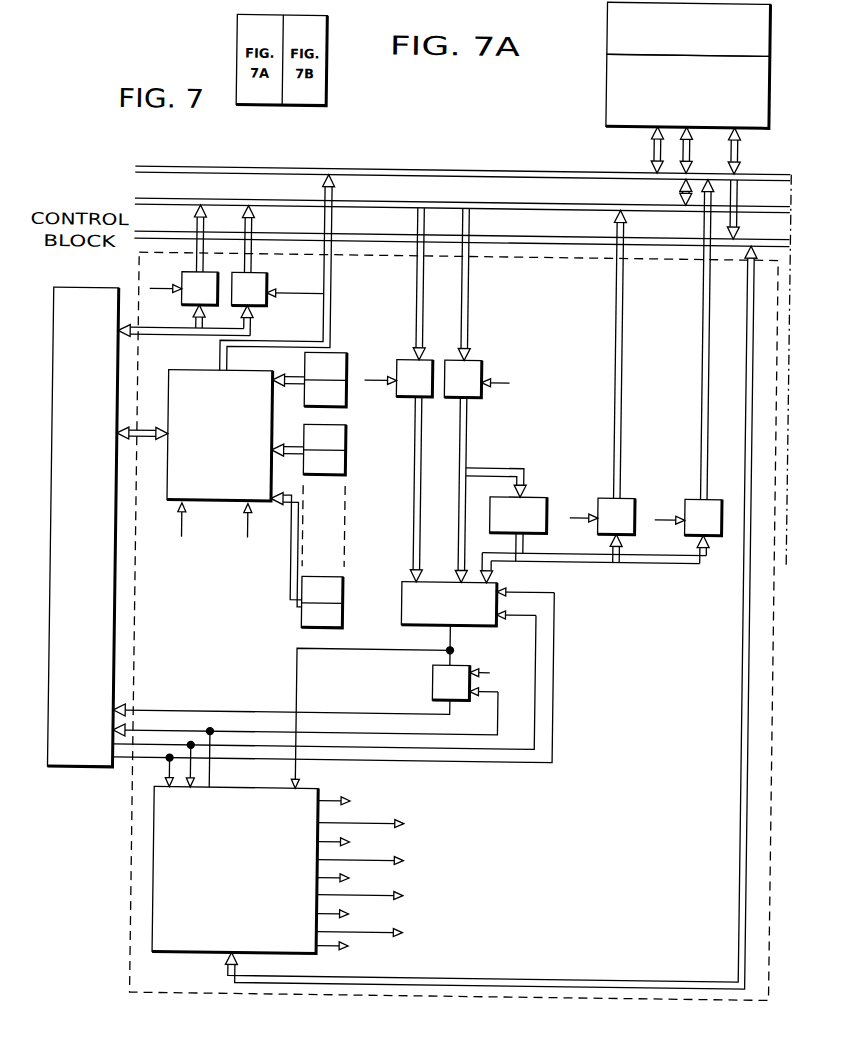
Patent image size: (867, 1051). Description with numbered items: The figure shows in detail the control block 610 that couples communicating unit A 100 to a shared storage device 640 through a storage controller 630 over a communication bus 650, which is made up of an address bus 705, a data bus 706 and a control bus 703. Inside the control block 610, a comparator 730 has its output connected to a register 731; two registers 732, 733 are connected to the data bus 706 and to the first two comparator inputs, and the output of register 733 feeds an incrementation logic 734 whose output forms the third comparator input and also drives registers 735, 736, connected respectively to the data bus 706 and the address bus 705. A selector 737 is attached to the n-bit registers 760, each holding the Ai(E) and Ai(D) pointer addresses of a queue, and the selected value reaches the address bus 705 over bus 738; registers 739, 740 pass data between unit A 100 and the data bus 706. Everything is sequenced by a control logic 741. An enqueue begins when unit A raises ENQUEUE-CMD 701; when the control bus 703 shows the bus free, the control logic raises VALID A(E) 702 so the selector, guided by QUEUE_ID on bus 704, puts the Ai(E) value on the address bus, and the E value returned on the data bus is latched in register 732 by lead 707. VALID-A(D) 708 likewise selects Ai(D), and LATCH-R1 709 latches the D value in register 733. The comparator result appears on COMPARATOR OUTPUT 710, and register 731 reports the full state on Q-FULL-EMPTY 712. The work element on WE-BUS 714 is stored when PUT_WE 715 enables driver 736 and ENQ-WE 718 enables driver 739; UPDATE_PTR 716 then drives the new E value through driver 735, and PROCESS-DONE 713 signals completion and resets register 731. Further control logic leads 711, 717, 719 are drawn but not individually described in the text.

The unit A 100 is at (52, 773).
The control block 610 is at (136, 266).
The storage controller 630 is at (601, 101).
The storage device 640 is at (601, 43).
The communication bus 650 is at (650, 150).
The ENQUEUE-CMD lead 701 is at (168, 770).
The VALID A(E) lead 702 is at (279, 658).
The control bus (C_BUS) 703 is at (381, 235).
The QUEUE_ID bus 704 is at (144, 446).
The address bus (A_BUS) 705 is at (232, 170).
The data bus (D_BUS) 706 is at (276, 204).
The register 732 set lead 707 is at (438, 612).
The VALID-A(D) lead 708 is at (339, 669).
The LATCH-R1 lead 709 is at (378, 381).
The COMPARATOR OUTPUT lead 710 is at (297, 696).
The register load control line 711 is at (483, 672).
The Q-FULL-EMPTY lead 712 is at (446, 717).
The PROCESS-DONE lead 713 is at (212, 734).
The WE-BUS 714 is at (144, 344).
The PUT_WE lead 715 is at (668, 517).
The UPDATE_PTR lead 716 is at (580, 516).
The input lines to control logic 717 is at (193, 773).
The ENQ-WE lead 718 is at (164, 292).
The register 719 is at (284, 296).
The comparator 730 is at (500, 582).
The register 731 is at (434, 686).
The register 732 is at (395, 398).
The register 733 is at (474, 400).
The incrementation logic (INC) 734 is at (532, 489).
The register/driver 735 is at (628, 496).
The register/driver 736 is at (723, 534).
The selector 737 is at (202, 372).
The selector output bus 738 is at (329, 298).
The register/driver 739 is at (183, 308).
The register 740 is at (265, 311).
The control logic 741 is at (190, 956).
The n-bit registers 760 is at (364, 323).